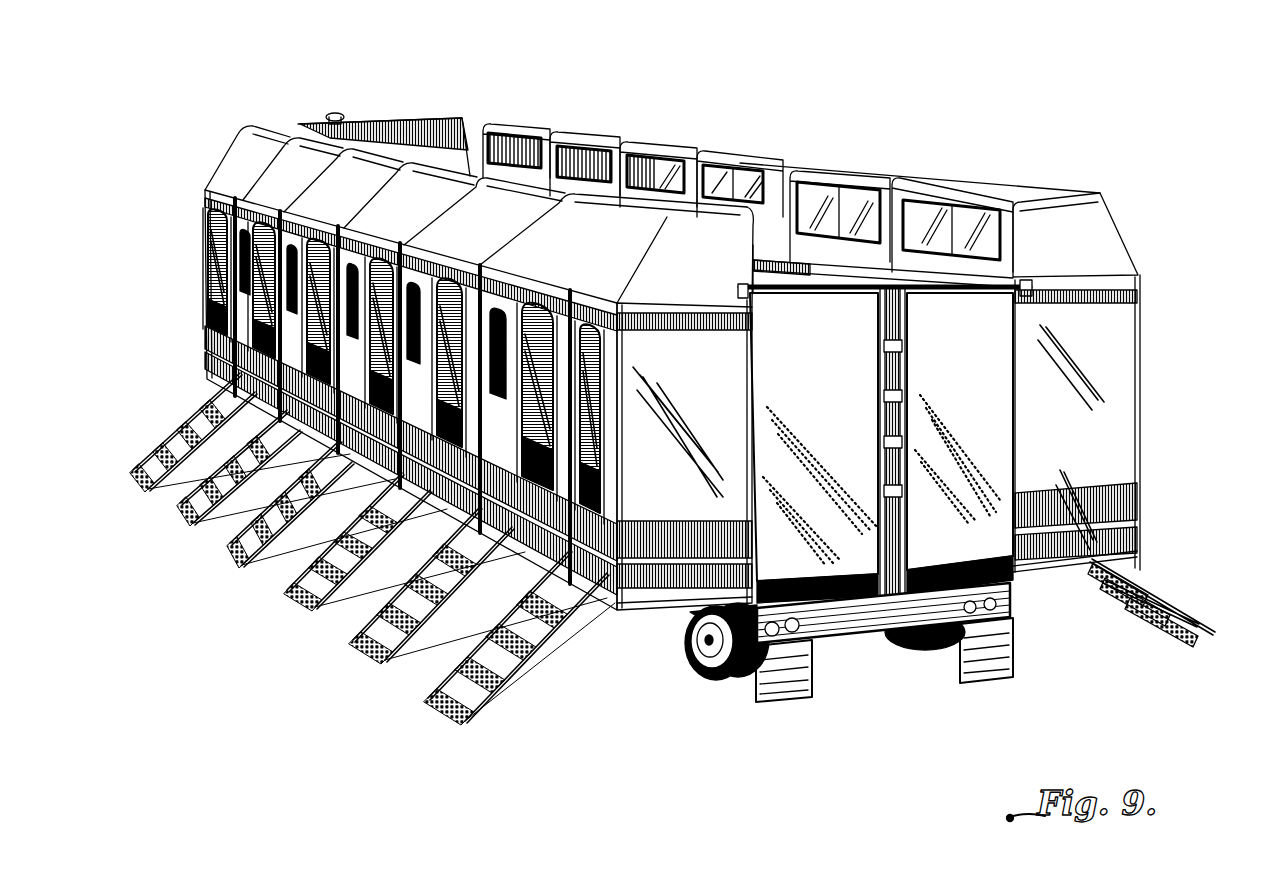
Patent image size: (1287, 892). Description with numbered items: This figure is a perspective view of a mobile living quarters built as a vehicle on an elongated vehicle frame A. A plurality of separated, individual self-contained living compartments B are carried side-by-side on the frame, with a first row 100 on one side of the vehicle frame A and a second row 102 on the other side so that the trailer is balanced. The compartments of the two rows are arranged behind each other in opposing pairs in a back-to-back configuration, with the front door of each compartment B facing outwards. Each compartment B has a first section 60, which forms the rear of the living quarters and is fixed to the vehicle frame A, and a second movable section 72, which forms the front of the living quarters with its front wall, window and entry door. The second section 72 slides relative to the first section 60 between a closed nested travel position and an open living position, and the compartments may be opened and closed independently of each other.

The first row 100 is at (651, 614).
The living compartment B is at (222, 150).
The second row 102 is at (1148, 276).
The first section 60 is at (975, 356).
The second movable section 72 is at (1108, 354).
The vehicle frame A is at (875, 636).